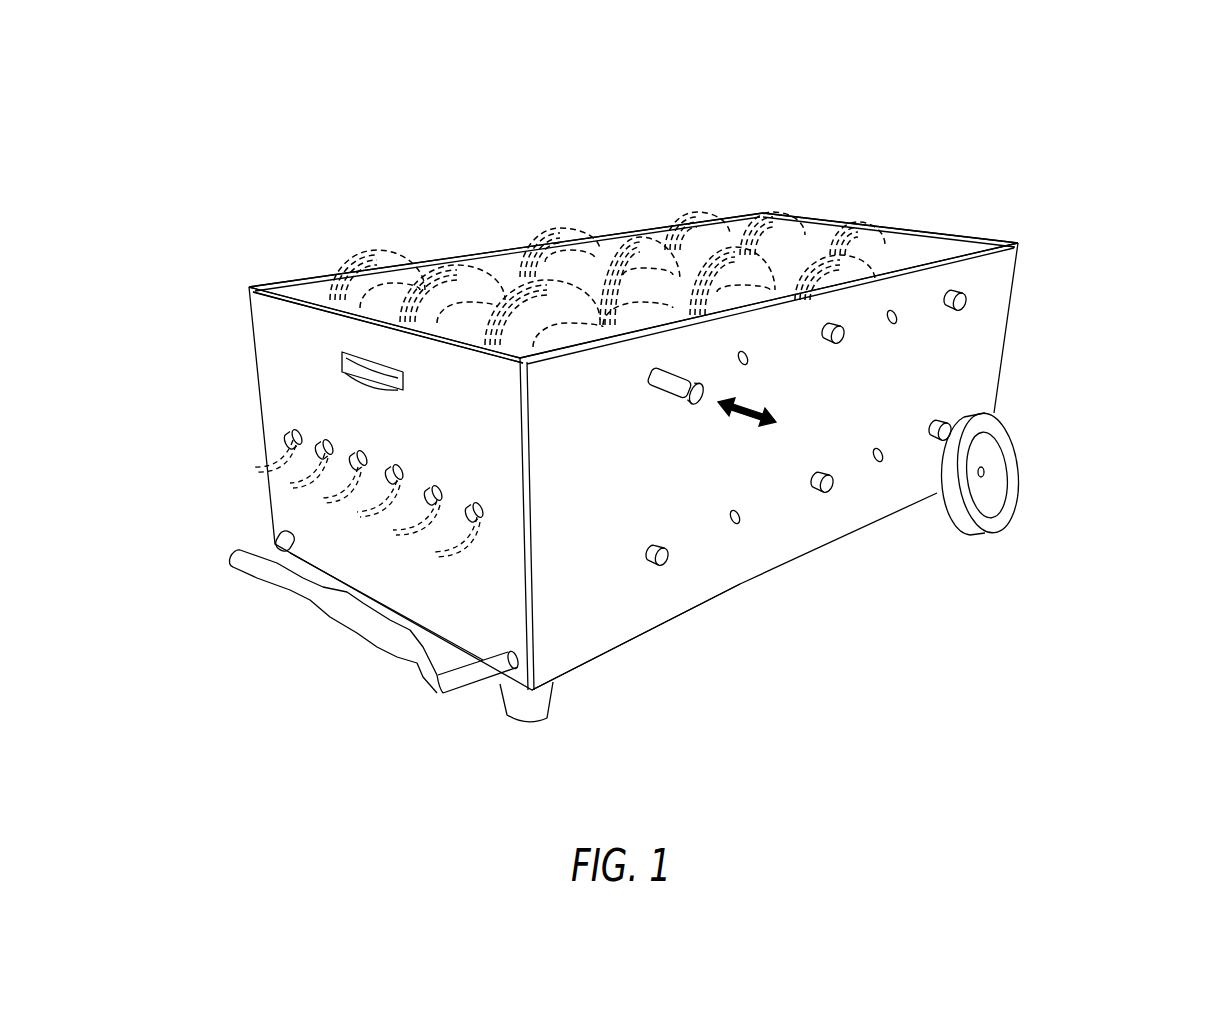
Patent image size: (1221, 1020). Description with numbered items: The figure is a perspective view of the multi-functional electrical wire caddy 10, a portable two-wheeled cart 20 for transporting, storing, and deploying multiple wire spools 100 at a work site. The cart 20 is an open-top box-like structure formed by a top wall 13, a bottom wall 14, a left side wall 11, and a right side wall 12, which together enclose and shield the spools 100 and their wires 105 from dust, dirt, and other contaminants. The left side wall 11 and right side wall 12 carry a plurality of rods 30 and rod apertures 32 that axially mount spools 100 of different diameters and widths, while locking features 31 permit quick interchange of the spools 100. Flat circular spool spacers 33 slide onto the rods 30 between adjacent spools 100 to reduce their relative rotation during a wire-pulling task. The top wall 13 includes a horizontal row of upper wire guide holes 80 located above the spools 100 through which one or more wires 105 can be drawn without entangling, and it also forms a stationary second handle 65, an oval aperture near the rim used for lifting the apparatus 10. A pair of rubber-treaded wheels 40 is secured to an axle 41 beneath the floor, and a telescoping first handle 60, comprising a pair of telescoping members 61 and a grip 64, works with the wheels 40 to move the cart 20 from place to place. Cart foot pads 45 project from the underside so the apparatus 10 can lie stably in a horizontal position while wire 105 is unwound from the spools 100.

The multi-functional electrical wire caddy 10 is at (1147, 165).
The left side wall 11 is at (996, 240).
The right side wall 12 is at (291, 285).
The top wall 13 is at (250, 290).
The bottom wall 14 is at (963, 235).
The cart 20 is at (688, 626).
The rods 30 is at (955, 309).
The locking features 31 is at (690, 393).
The rod apertures 32 is at (733, 512).
The spool spacers 33 is at (500, 335).
The wheels 40 is at (992, 502).
The axle 41 is at (984, 471).
The cart foot pads 45 is at (282, 537).
The telescoping first handle 60 is at (284, 618).
The first handle telescoping members 61 is at (282, 537).
The first handle grip 64 is at (378, 652).
The stationary second handle 65 is at (345, 363).
The upper wire guide holes 80 is at (478, 503).
The wire spools 100 is at (555, 290).
The wires 105 is at (437, 552).